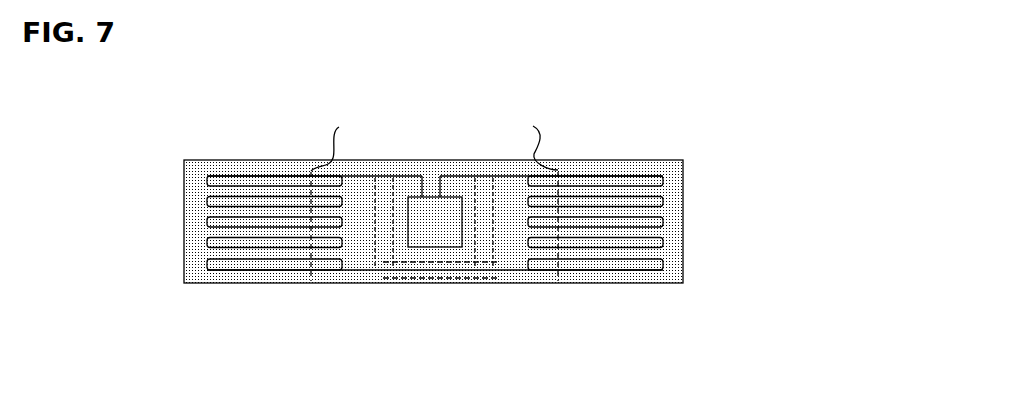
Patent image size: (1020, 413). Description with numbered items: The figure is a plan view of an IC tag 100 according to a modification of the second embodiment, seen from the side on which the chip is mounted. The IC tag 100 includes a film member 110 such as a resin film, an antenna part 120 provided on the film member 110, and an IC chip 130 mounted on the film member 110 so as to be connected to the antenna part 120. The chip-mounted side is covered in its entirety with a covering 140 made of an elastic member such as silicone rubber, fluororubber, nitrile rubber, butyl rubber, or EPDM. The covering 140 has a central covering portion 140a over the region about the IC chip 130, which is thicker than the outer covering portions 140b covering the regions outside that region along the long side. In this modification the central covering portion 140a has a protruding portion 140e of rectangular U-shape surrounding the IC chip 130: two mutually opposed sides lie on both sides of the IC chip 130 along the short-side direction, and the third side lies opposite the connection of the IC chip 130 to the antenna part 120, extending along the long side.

The IC tag 100 is at (280, 77).
The film member 110 is at (592, 160).
The antenna part 120 is at (610, 268).
The IC chip 130 is at (442, 218).
The covering 140 is at (255, 195).
The central covering portion 140a is at (417, 192).
The outer covering portions 140b is at (270, 248).
The protruding portion 140e is at (440, 284).